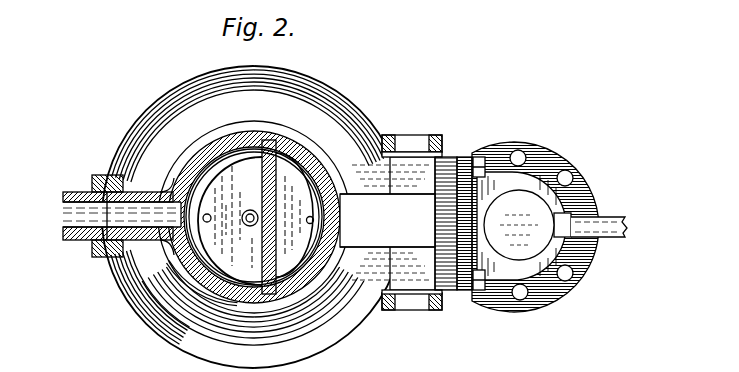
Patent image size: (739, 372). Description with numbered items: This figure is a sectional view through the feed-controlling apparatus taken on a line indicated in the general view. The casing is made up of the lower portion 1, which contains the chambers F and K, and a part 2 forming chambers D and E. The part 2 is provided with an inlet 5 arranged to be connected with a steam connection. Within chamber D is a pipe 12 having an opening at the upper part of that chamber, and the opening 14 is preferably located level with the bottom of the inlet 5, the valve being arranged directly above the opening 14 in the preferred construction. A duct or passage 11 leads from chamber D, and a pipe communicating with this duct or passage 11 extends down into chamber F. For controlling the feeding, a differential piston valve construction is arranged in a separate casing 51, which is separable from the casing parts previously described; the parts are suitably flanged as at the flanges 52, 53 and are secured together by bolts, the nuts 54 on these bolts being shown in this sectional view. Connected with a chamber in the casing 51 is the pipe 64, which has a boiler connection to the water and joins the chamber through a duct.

The lower portion of casing 1 is at (116, 283).
The casing part 2 is at (324, 181).
The inlet 5 is at (172, 185).
The duct or passage 11 is at (207, 213).
The pipe 12 is at (249, 210).
The opening 14 is at (278, 213).
The casing 51 is at (535, 192).
The flange 52 is at (450, 157).
The flange 53 is at (465, 157).
The nuts 54 is at (480, 157).
The pipe 64 is at (604, 218).